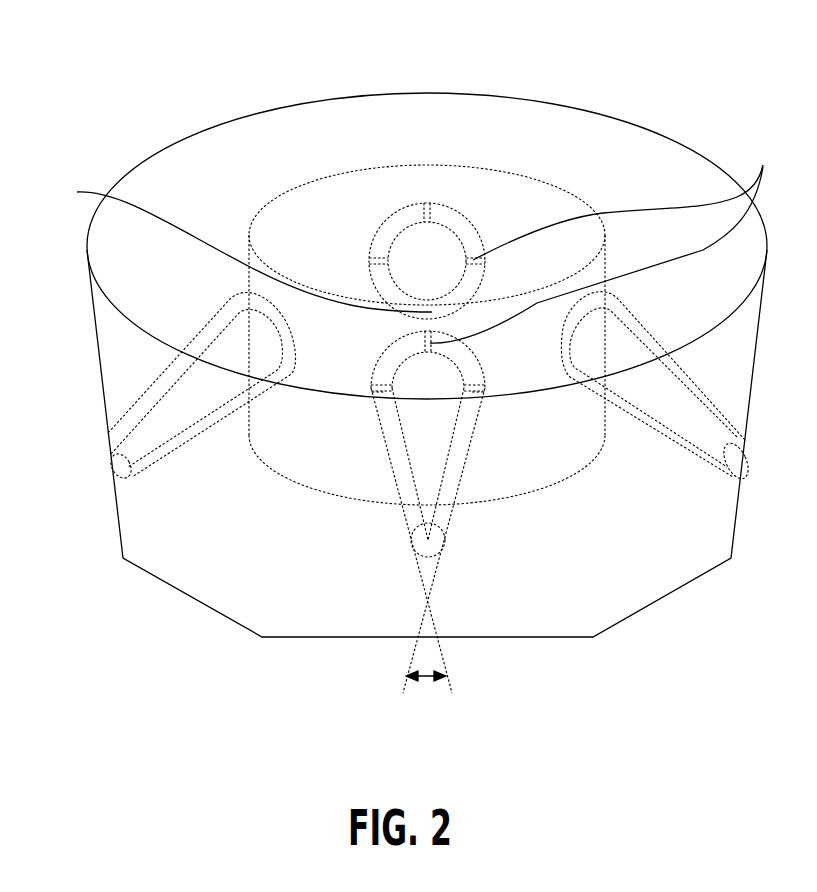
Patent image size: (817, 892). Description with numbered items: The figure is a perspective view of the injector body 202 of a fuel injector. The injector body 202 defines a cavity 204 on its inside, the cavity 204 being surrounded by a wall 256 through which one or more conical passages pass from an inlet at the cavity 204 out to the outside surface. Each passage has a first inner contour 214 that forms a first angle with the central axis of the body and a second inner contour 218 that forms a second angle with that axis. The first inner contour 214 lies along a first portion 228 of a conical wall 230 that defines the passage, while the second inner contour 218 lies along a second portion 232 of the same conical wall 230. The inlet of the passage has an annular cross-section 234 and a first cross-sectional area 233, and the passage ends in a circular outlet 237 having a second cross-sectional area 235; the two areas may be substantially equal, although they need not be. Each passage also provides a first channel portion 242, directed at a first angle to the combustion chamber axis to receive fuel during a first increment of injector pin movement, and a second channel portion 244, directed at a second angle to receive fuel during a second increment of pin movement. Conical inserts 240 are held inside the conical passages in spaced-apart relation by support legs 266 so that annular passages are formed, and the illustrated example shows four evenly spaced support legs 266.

The injector body 202 is at (518, 117).
The cavity 204 is at (334, 210).
The first channel portion 242 is at (397, 220).
The annular cross-section 234 is at (468, 232).
The wall 256 is at (675, 175).
The second channel portion 244 is at (238, 246).
The support legs 266 is at (598, 235).
The first portion of conical wall 228 is at (388, 352).
The first inner contour 214 is at (372, 392).
The conical wall 230 is at (407, 510).
The second portion of conical wall 232 is at (467, 427).
The first cross-sectional area 233 is at (475, 373).
The second inner contour 218 is at (427, 553).
The circular outlet 237 is at (460, 470).
The second cross-sectional area 235 is at (506, 532).
The conical inserts 240 is at (182, 435).